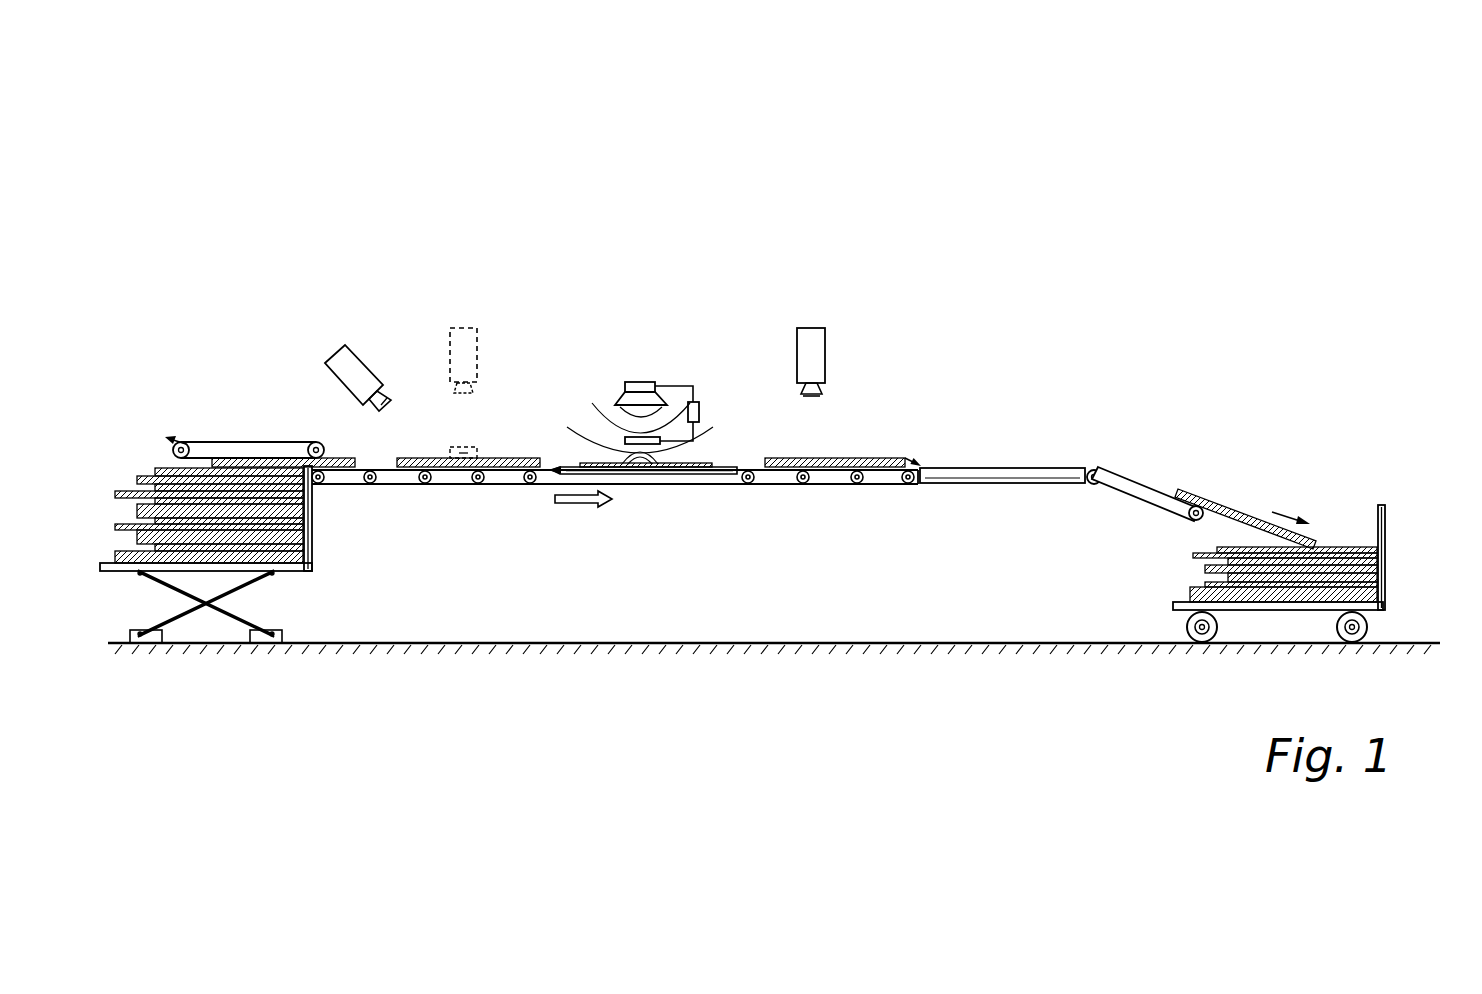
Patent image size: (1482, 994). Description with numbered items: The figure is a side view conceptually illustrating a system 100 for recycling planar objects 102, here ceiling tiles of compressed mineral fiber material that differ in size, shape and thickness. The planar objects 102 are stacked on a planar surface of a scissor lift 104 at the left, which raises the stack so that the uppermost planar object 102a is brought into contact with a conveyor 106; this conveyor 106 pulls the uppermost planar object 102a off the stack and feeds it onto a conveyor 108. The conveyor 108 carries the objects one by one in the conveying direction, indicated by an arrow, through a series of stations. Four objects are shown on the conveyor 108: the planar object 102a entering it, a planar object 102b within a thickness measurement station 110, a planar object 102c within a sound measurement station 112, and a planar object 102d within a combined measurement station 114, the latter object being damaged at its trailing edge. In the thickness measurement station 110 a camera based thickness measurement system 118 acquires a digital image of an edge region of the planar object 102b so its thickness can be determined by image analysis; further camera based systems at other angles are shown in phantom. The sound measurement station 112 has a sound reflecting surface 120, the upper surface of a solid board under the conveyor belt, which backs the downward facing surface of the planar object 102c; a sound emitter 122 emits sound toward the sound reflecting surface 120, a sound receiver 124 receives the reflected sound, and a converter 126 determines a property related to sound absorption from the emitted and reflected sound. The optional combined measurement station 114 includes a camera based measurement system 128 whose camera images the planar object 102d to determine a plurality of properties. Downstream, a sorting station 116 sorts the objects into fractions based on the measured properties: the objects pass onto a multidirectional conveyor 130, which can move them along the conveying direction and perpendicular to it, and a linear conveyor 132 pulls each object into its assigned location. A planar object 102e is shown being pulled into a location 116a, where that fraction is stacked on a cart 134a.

The system for recycling planar objects 100 is at (245, 143).
The planar objects 102 is at (125, 458).
The uppermost planar object 102a is at (346, 470).
The planar object 102b is at (428, 480).
The planar object 102c is at (576, 463).
The planar object 102d is at (845, 457).
The planar object 102e is at (1258, 512).
The scissor lift 104 is at (124, 612).
The conveyor 106 is at (246, 441).
The conveyor 108 is at (700, 486).
The thickness measurement station 110 is at (515, 343).
The sound measurement station 112 is at (639, 367).
The combined measurement station 114 is at (852, 330).
The sorting station 116 is at (1201, 456).
The location 116a is at (1327, 540).
The camera based thickness measurement system 118 is at (352, 352).
The sound reflecting surface 120 is at (720, 467).
The sound emitter 122 is at (638, 381).
The sound receiver 124 is at (624, 440).
The converter 126 is at (700, 404).
The camera based measurement system 128 is at (808, 328).
The multidirectional conveyor 130 is at (990, 486).
The linear conveyor 132 is at (1135, 502).
The cart 134a is at (1386, 566).